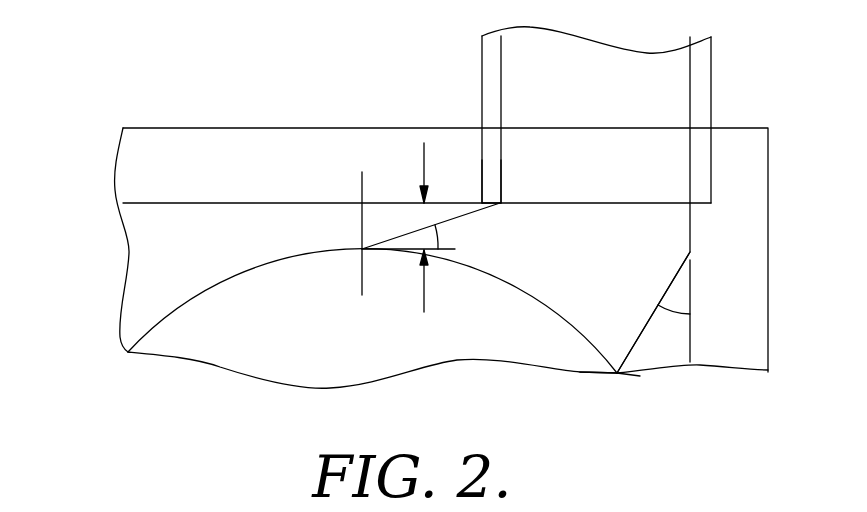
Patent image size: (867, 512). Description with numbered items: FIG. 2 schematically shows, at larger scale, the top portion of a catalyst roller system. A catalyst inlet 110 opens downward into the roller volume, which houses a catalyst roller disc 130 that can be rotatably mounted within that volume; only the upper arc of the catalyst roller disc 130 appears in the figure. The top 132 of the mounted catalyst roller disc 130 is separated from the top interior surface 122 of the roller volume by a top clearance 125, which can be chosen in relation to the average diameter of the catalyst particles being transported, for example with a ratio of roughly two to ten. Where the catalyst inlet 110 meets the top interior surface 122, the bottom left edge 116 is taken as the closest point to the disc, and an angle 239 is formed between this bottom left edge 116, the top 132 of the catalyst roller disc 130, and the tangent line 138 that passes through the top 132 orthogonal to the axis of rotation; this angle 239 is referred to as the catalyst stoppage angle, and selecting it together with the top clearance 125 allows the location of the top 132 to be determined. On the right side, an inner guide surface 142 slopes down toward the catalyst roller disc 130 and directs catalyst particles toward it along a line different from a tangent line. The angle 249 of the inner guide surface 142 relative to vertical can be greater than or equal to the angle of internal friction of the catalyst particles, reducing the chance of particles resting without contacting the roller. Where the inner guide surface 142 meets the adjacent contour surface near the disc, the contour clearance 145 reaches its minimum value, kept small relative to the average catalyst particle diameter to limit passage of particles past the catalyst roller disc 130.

The catalyst inlet 110 is at (711, 63).
The bottom left edge 116 is at (493, 187).
The top interior surface 122 is at (283, 190).
The top clearance 125 is at (356, 228).
The catalyst roller disc 130 is at (147, 312).
The top 132 is at (358, 272).
The tangent line 138 is at (450, 257).
The inner guide surface 142 is at (683, 290).
The contour clearance 145 is at (617, 378).
The angle 239 is at (487, 233).
The angle 249 is at (657, 362).